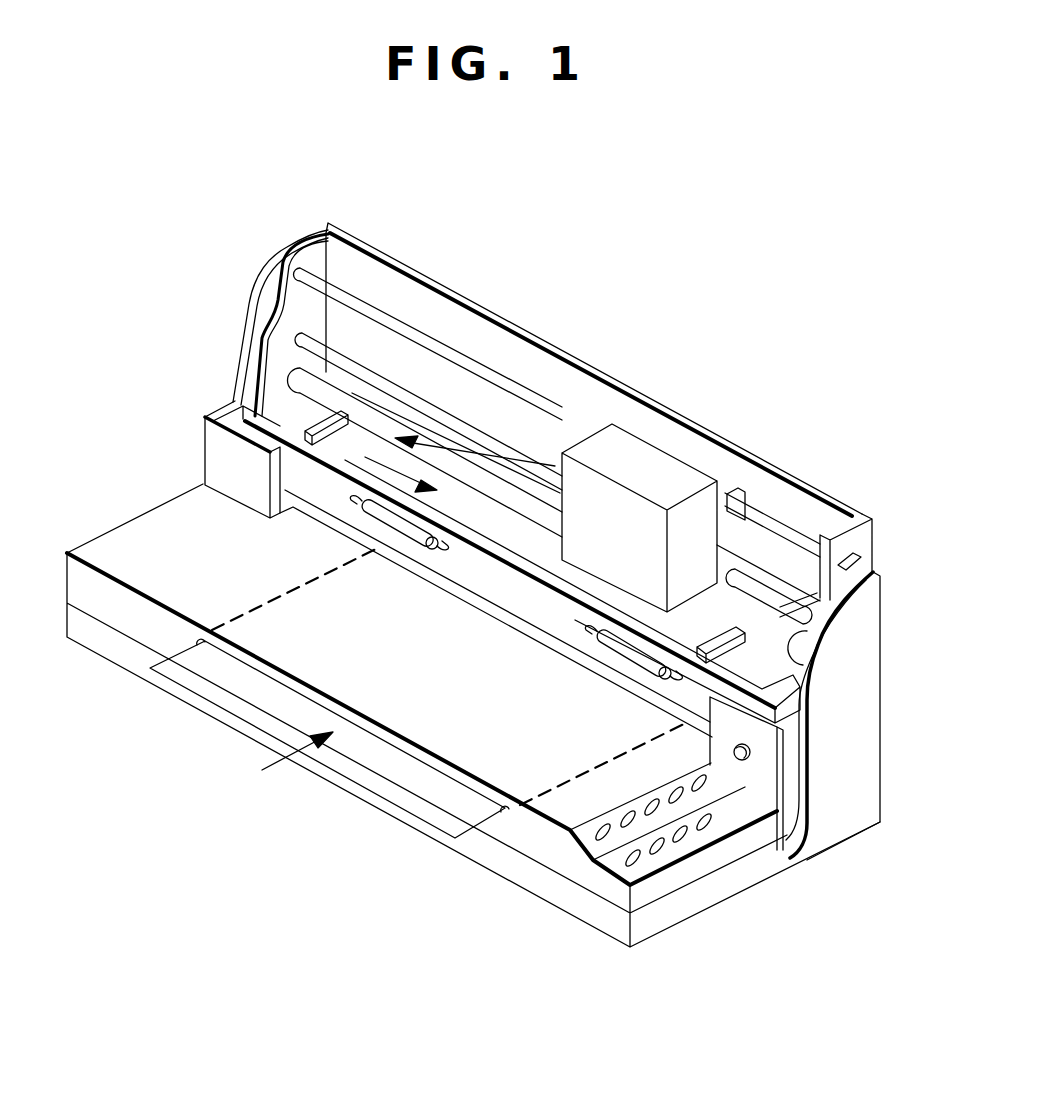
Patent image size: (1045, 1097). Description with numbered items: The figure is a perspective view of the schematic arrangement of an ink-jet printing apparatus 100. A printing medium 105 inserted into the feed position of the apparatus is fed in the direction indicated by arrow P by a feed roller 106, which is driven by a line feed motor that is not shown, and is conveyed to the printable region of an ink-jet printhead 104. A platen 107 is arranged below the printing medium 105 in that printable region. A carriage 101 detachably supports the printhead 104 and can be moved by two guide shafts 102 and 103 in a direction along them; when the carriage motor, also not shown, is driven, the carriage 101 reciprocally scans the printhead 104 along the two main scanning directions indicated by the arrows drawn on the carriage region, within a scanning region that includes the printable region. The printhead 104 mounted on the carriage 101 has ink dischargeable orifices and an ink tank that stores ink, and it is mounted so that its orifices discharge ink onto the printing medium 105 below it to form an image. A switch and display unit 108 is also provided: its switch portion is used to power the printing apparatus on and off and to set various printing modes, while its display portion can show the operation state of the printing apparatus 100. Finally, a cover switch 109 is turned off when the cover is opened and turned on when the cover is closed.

The ink-jet printing apparatus 100 is at (440, 843).
The carriage 101 is at (730, 533).
The guide shaft 102 is at (303, 272).
The guide shaft 103 is at (300, 340).
The ink-jet printhead 104 is at (640, 453).
The printing medium 105 is at (337, 752).
The feed roller 106 is at (767, 627).
The platen 107 is at (313, 418).
The switch & display unit 108 is at (693, 857).
The cover switch 109 is at (751, 754).